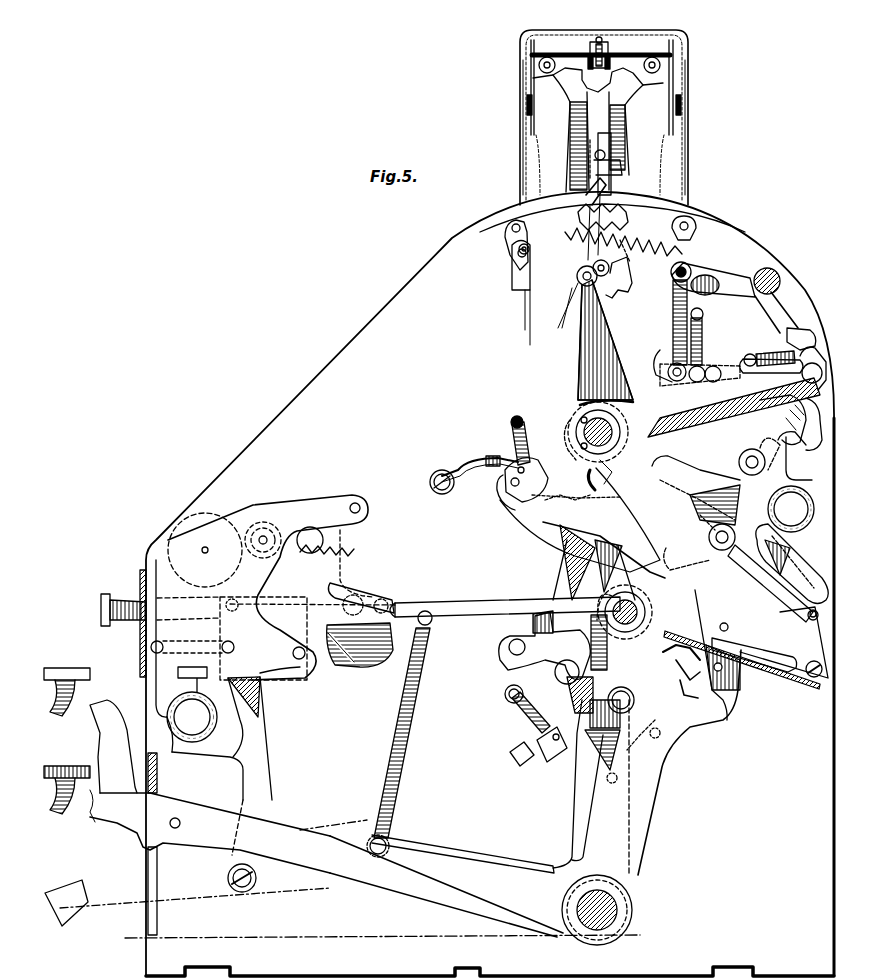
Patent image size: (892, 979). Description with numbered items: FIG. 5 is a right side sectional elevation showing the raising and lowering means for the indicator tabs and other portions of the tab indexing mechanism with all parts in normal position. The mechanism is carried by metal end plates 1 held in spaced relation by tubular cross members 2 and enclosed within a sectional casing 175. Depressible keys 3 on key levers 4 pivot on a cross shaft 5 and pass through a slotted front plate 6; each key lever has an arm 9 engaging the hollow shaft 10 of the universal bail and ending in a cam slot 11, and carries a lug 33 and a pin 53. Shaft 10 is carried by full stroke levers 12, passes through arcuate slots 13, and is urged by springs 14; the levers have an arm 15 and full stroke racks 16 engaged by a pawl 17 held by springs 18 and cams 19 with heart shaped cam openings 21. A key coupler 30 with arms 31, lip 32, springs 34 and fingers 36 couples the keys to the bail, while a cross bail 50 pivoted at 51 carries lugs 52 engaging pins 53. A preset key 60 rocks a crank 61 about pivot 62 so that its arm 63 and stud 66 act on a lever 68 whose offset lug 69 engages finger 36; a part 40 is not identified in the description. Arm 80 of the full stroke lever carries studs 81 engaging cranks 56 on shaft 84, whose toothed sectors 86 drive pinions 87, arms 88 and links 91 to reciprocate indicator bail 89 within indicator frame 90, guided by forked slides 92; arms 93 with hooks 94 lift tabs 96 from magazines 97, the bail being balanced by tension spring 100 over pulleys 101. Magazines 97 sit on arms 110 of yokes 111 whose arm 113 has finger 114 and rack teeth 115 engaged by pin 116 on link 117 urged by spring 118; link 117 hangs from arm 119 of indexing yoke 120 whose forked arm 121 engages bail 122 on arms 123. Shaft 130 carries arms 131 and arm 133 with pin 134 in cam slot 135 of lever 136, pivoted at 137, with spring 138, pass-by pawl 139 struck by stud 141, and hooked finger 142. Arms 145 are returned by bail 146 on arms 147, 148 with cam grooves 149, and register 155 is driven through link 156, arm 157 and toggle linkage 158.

The side or end plates 1 is at (458, 248).
The tubular cross members 2 is at (490, 614).
The depressible keys 3 is at (64, 676).
The key levers 4 is at (100, 742).
The cross shaft 5 is at (614, 906).
The slotted front plate 6 is at (158, 776).
The arm 9 is at (652, 780).
The hollow shaft 10 is at (635, 700).
The cam slot 11 is at (800, 572).
The full stroke levers 12 is at (580, 808).
The arcuate slots 13 is at (606, 768).
The springs 14 is at (400, 762).
The arm 15 is at (442, 842).
The full stroke racks 16 is at (548, 520).
The pawl 17 is at (530, 508).
The springs 18 is at (513, 446).
The cams 19 is at (456, 474).
The heart shaped cam openings 21 is at (505, 486).
The key coupler 30 is at (668, 652).
The arms 31 is at (556, 750).
The lip 32 is at (692, 666).
The lugs 33 is at (690, 694).
The springs 34 is at (662, 760).
The fingers 36 is at (500, 658).
The bolt 40 is at (506, 692).
The cross bail 50 is at (790, 666).
The pivot 51 is at (814, 678).
The upstanding lug 52 is at (712, 630).
The pin 53 is at (728, 626).
The cranks 56 is at (633, 288).
The preset key 60 is at (105, 594).
The crank 61 is at (258, 724).
The pivot 62 is at (228, 876).
The rearwardly extending arm 63 is at (366, 824).
The stud 66 is at (293, 630).
The lever 68 is at (355, 668).
The offset lug 69 is at (532, 622).
The arm 80 is at (752, 476).
The studs 81 is at (760, 476).
The shaft 84 is at (582, 418).
The toothed sectors 86 is at (642, 242).
The pinions 87 is at (602, 204).
The arm 88 is at (600, 176).
The indicator bail 89 is at (577, 78).
The indicator frame 90 is at (676, 36).
The link 91 is at (614, 145).
The forked slides 92 is at (624, 122).
The arms 93 is at (530, 66).
The hooks 94 is at (524, 102).
The tabs 96 is at (567, 300).
The tab magazines 97 is at (526, 284).
The tension spring 100 is at (599, 38).
The pulleys 101 is at (610, 52).
The arms 110 is at (580, 340).
The yokes 111 is at (570, 430).
The arm 113 is at (798, 452).
The depending finger 114 is at (796, 472).
The rack teeth 115 is at (795, 430).
The pin 116 is at (810, 332).
The pivoted link 117 is at (778, 410).
The spring 118 is at (760, 364).
The arm 119 is at (746, 358).
The indexing yoke 120 is at (582, 400).
The forked arm 121 is at (706, 522).
The bail 122 is at (720, 546).
The arms 123 is at (560, 530).
The shaft 130 is at (770, 268).
The arm 131 is at (780, 298).
The arm 133 is at (730, 275).
The pin 134 is at (683, 262).
The cam slot 135 is at (708, 276).
The lever 136 is at (704, 318).
The pivot pin 137 is at (668, 350).
The tension spring 138 is at (673, 318).
The pass-by pawl 139 is at (720, 358).
The stud 141 is at (754, 404).
The hooked finger 142 is at (666, 368).
The downwardly projecting arms 145 is at (560, 578).
The return bail 146 is at (648, 614).
The arm 147 is at (650, 624).
The arms 148 is at (610, 470).
The cam grooves 149 is at (690, 500).
The totalizing accumulator 155 is at (275, 510).
The link 156 is at (470, 603).
The arm 157 is at (718, 568).
The toggle linkage 158 is at (356, 594).
The sectional casing 175 is at (140, 572).